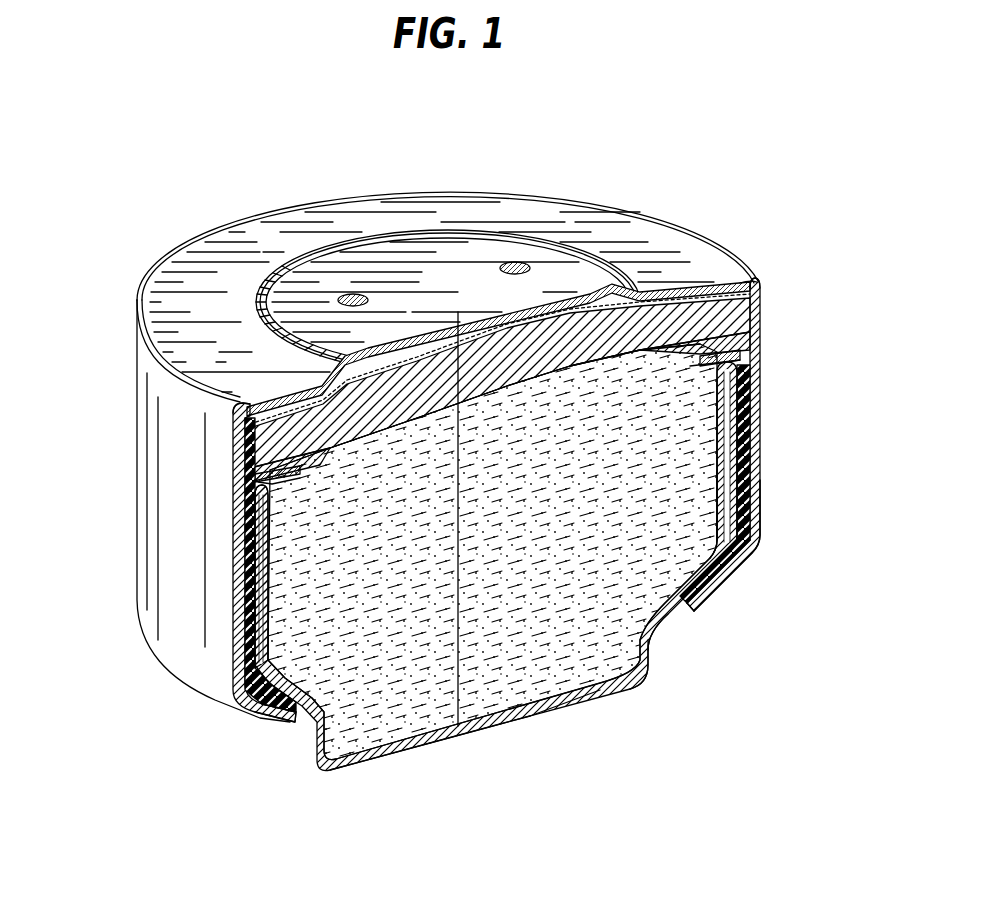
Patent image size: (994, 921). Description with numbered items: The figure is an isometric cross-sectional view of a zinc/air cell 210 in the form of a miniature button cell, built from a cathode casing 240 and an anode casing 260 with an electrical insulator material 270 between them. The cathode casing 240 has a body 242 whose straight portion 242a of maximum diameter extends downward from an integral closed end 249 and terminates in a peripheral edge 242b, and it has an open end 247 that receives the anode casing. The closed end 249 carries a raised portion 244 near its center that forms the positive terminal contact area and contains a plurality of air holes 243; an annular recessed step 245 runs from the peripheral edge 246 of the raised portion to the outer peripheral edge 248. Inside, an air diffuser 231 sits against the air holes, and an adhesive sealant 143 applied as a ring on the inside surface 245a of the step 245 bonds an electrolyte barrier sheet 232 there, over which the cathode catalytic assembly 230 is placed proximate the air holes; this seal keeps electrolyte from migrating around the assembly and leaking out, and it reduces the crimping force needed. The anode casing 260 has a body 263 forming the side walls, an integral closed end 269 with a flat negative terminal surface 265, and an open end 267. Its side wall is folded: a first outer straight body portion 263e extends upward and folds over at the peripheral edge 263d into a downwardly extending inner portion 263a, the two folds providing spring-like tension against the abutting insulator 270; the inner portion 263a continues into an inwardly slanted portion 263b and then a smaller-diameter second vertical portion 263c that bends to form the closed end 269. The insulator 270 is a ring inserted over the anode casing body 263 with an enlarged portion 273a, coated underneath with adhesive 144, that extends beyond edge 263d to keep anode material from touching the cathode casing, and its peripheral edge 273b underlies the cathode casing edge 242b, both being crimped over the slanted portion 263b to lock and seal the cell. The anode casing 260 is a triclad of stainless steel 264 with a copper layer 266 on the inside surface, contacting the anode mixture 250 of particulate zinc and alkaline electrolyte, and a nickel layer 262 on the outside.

The zinc/air cell 210 is at (206, 168).
The closed end of cathode casing 249 is at (199, 247).
The peripheral edge of raised terminal portion 246 is at (304, 258).
The air holes 243 is at (352, 295).
The raised portion 244 is at (465, 250).
The annular recessed step 245 is at (590, 223).
The cathode casing 240 is at (635, 252).
The air diffuser 231 is at (705, 290).
The inside surface of step 245a is at (714, 280).
The adhesive sealant 143 is at (247, 410).
The electrolyte barrier sheet 232 is at (750, 293).
The cathode catalytic assembly 230 is at (745, 317).
The enlarged portion of insulator ring 273a is at (245, 463).
The adhesive 144 is at (287, 477).
The peripheral edge of anode casing 263d is at (273, 478).
The body of cathode casing 242 is at (761, 392).
The electrical insulator material 270 is at (745, 420).
The first outer straight body portion 263e is at (738, 445).
The inner portion of anode casing side wall 263a is at (717, 483).
The straight portion of cathode casing body 242a is at (761, 517).
The peripheral edge of insulator ring 273b is at (738, 578).
The peripheral edge of cathode casing 242b is at (701, 612).
The inwardly slanted portion 263b is at (655, 622).
The second downwardly extending vertical portion 263c is at (648, 654).
The anode casing 260 is at (643, 688).
The anode mixture 250 is at (572, 662).
The nickel layer 262 is at (543, 712).
The stainless steel 264 is at (505, 720).
The negative terminal surface 265 is at (454, 732).
The closed end of anode casing 269 is at (400, 745).
The copper layer 266 is at (366, 755).
The open end of cathode casing 247 is at (289, 730).
The body of anode casing 263 is at (240, 600).
The open end of anode casing 267 is at (240, 504).
The outer peripheral edge 248 is at (135, 322).